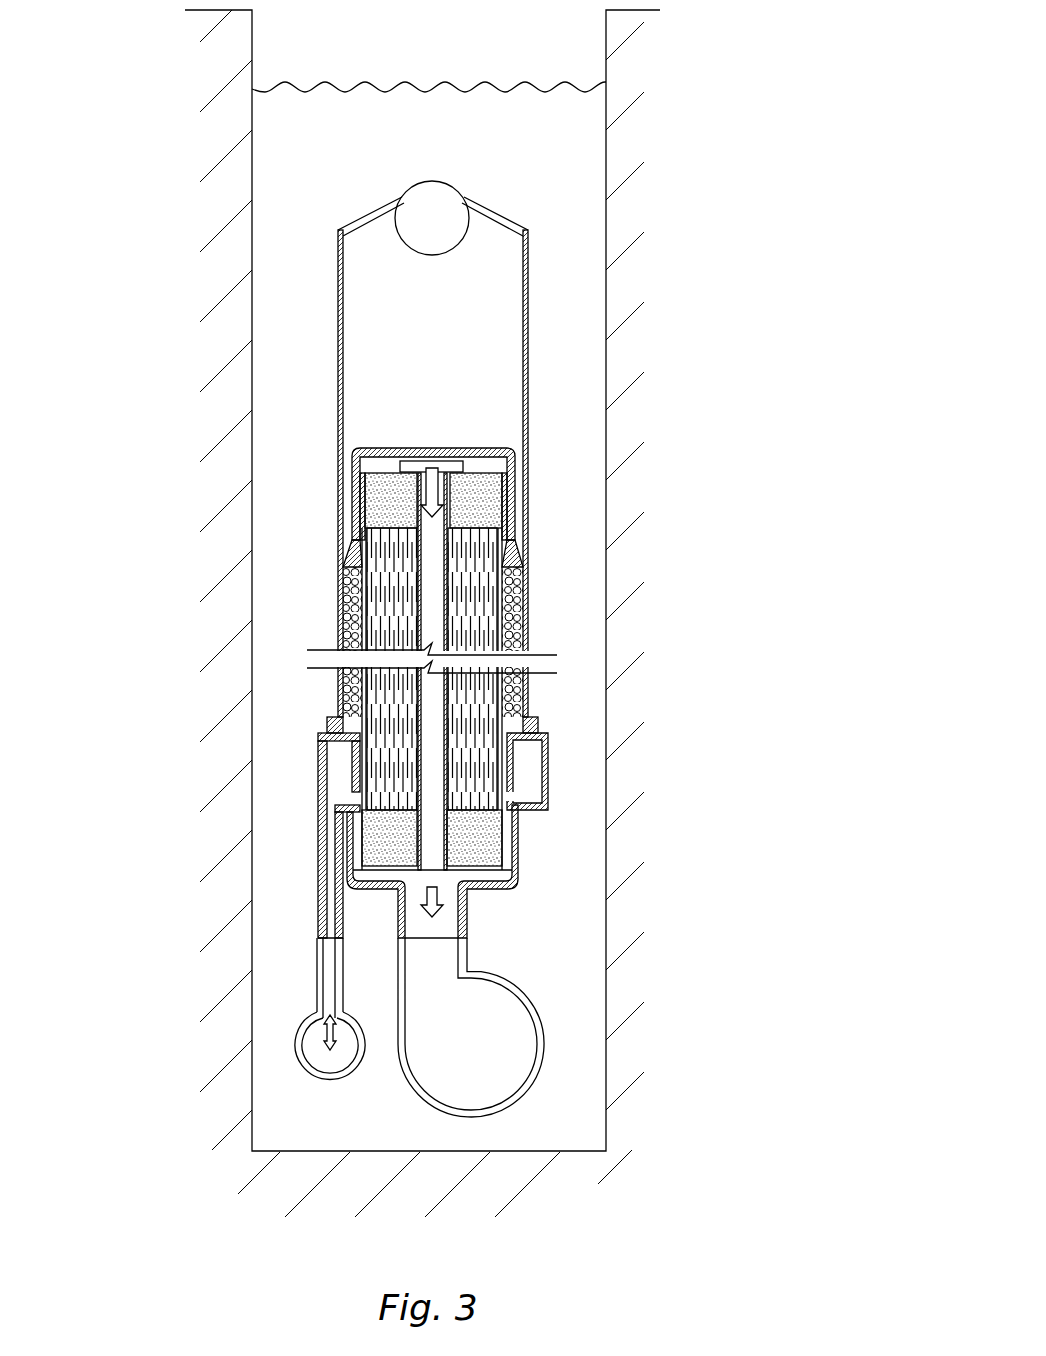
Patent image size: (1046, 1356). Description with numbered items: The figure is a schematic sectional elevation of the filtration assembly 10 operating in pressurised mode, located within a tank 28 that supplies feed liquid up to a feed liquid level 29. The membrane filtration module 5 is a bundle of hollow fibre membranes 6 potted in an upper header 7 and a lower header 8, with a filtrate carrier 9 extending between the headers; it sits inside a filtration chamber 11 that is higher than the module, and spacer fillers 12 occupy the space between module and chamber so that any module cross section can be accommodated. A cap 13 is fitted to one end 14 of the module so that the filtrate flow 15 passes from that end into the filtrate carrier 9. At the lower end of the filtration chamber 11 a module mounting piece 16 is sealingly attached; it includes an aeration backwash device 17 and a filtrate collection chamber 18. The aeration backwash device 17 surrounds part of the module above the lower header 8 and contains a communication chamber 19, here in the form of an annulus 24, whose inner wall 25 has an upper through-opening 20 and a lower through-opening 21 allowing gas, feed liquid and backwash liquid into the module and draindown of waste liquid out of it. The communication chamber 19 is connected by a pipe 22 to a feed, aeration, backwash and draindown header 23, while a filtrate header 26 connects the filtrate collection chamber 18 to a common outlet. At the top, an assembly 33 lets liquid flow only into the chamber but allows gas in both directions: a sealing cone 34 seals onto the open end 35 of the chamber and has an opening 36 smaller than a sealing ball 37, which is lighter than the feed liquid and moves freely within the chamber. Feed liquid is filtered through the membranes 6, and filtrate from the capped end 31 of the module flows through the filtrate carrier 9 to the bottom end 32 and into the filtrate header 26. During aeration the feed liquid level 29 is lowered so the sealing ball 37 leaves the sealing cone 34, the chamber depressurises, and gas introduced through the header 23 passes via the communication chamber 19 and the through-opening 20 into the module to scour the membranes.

The membrane filtration module 5 is at (487, 430).
The hollow fibre membranes 6 is at (385, 617).
The upper header 7 is at (383, 493).
The lower header 8 is at (480, 846).
The filtrate carrier 9 is at (447, 725).
The filtration assembly 10 is at (540, 503).
The filtration chamber 11 is at (335, 318).
The spacer fillers 12 is at (510, 613).
The cap 13 is at (353, 465).
The end of the module 14 is at (537, 507).
The filtrate flow 15 is at (412, 467).
The module mounting piece 16 is at (315, 868).
The aeration backwash device 17 is at (551, 760).
The filtrate collection chamber 18 is at (482, 876).
The communication chamber 19 is at (548, 779).
The upper through-opening 20 is at (347, 750).
The lower through-opening 21 is at (347, 795).
The pipe 22 is at (327, 948).
The feed, aeration, backwash and draindown header 23 is at (295, 1033).
The annulus 24 is at (547, 798).
The inner wall of the annulus 25 is at (350, 772).
The filtrate header 26 is at (542, 1019).
The tank 28 is at (582, 1075).
The feed liquid level 29 is at (478, 83).
The capped end of the module 31 is at (413, 433).
The bottom end of the module 32 is at (524, 891).
The assembly 33 is at (516, 201).
The sealing cone 34 is at (375, 208).
The open end of the filtration chamber 35 is at (499, 239).
The opening 36 is at (463, 183).
The sealing ball 37 is at (405, 186).